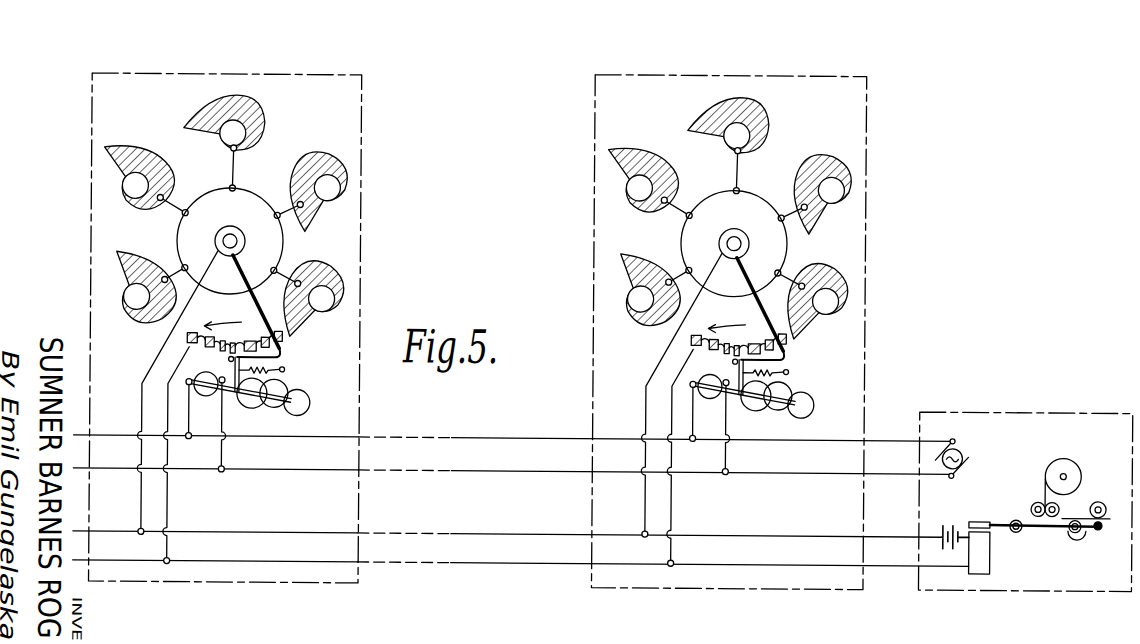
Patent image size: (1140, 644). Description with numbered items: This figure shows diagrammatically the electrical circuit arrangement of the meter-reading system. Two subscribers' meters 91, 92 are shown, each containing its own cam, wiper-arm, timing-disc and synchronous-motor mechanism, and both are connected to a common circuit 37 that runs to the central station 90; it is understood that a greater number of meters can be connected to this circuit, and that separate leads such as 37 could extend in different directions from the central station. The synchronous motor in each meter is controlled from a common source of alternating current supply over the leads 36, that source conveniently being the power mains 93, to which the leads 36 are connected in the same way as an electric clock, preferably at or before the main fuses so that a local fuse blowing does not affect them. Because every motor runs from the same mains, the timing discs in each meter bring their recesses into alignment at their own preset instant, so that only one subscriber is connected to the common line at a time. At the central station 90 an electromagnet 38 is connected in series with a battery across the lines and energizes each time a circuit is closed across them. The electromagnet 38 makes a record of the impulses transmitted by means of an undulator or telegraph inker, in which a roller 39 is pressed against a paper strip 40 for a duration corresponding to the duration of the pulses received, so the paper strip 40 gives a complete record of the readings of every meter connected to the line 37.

The leads 36 is at (499, 469).
The common circuit 37 is at (228, 561).
The electromagnet 38 is at (992, 556).
The roller 39 is at (1086, 526).
The paper strip 40 is at (1074, 512).
The central station 90 is at (1089, 409).
The subscriber's meter 91 is at (822, 83).
The subscriber's meter 92 is at (328, 81).
The power mains 93 is at (958, 435).